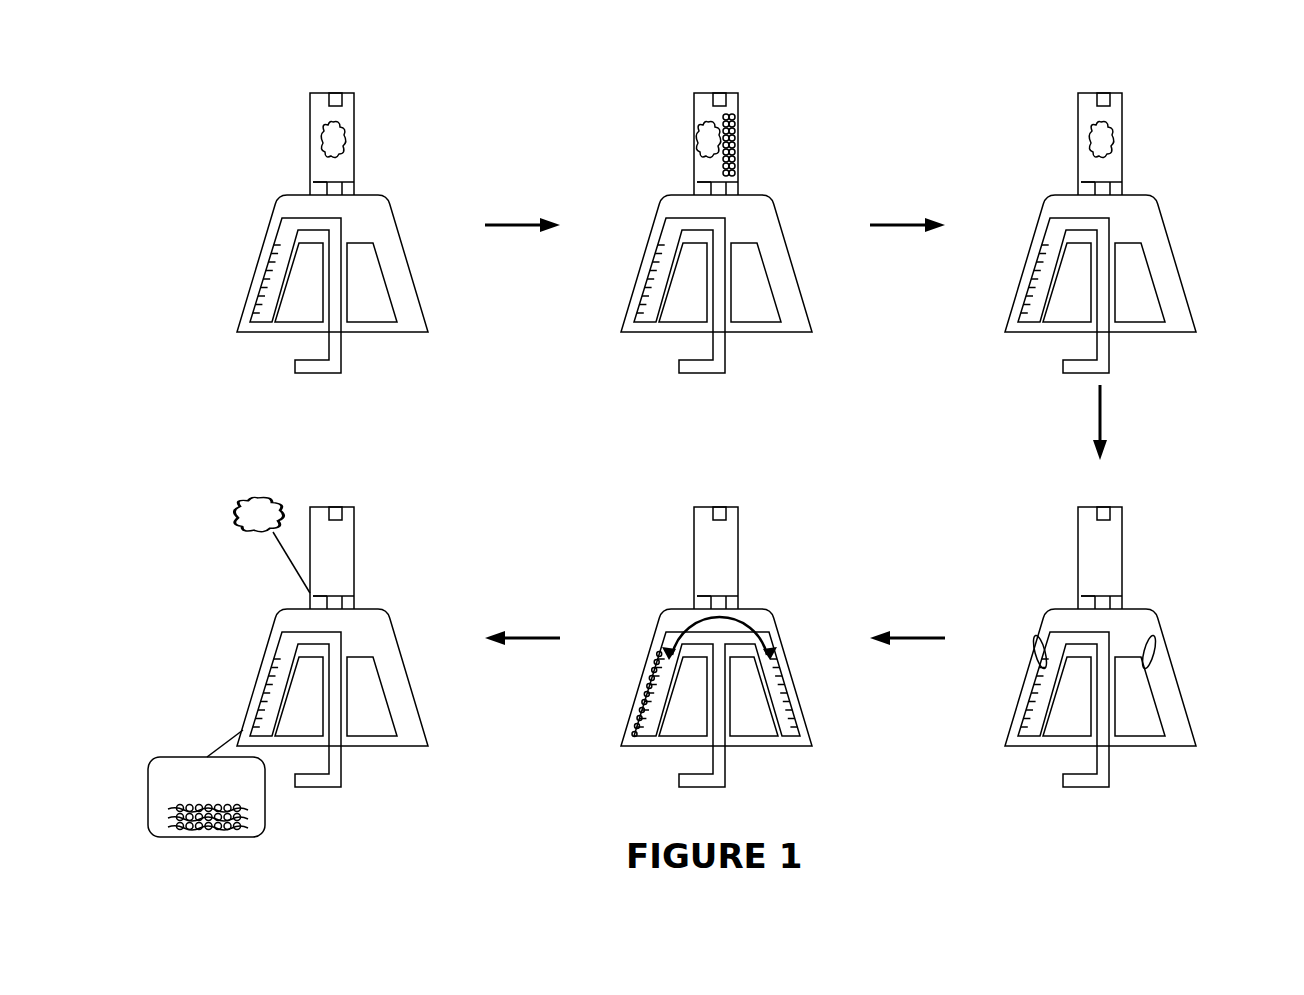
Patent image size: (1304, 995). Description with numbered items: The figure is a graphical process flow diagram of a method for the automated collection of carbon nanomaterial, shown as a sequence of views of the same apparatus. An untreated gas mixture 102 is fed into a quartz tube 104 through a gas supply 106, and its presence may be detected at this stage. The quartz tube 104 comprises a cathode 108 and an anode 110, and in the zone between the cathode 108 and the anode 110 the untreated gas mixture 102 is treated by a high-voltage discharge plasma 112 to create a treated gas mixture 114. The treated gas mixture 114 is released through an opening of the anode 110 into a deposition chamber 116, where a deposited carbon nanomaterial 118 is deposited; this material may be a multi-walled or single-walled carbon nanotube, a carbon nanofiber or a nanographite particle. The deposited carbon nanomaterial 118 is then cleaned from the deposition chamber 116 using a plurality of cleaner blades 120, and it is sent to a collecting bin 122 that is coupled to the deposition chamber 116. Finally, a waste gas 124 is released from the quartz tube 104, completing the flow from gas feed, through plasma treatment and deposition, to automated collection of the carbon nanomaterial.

The untreated gas mixture 102 is at (322, 140).
The quartz tube 104 is at (354, 131).
The gas supply 106 is at (313, 190).
The cathode 108 is at (335, 93).
The anode 110 is at (403, 210).
The high-voltage discharge plasma 112 is at (799, 154).
The treated gas mixture 114 is at (1125, 391).
The deposition chamber 116 is at (398, 264).
The deposited carbon nanomaterial 118 is at (419, 745).
The cleaner blades 120 is at (272, 301).
The collecting bin 122 is at (206, 783).
The waste gas 124 is at (249, 524).